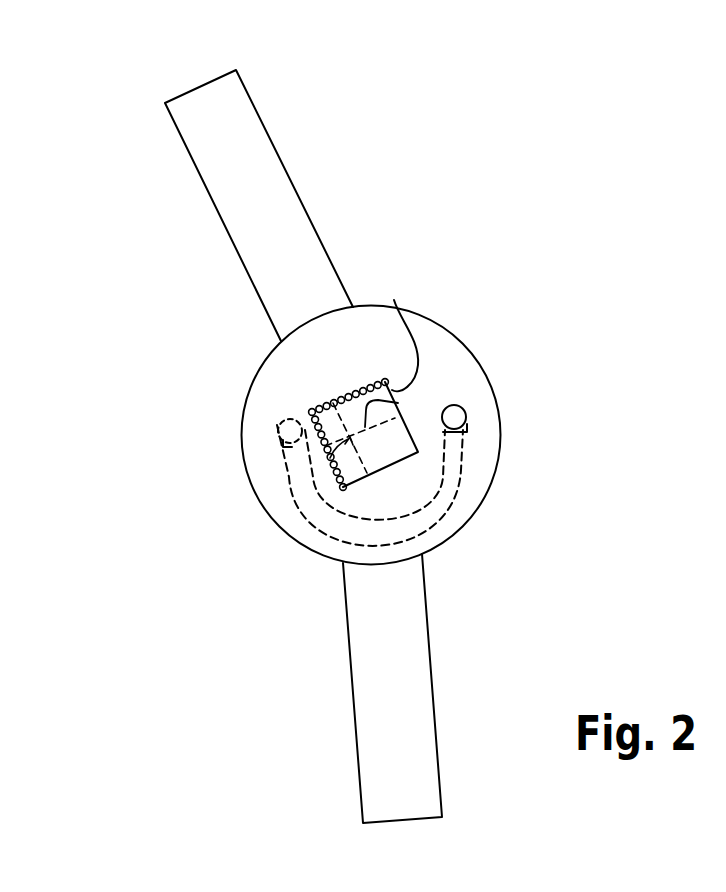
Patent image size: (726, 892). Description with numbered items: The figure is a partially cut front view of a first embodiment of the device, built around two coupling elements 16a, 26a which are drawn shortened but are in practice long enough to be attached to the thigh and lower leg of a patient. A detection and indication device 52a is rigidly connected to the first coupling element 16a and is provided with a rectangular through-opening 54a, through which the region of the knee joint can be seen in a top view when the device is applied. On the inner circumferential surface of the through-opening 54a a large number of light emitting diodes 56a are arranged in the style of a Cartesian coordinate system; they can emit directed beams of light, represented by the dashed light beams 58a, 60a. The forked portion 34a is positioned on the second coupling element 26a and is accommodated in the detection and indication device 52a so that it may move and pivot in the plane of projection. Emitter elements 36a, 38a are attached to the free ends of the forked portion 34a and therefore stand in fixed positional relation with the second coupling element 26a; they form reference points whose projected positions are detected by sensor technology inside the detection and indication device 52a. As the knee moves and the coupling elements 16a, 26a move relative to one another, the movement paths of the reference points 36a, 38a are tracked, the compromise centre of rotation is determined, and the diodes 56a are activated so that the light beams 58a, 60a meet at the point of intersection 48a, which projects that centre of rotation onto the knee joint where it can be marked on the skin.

The first coupling element 16a is at (253, 173).
The second coupling element 26a is at (392, 758).
The forked portion 34a is at (330, 527).
The emitter element 36a is at (280, 420).
The emitter element 38a is at (467, 413).
The point of intersection 48a is at (336, 470).
The detection and indication device 52a is at (430, 333).
The through-opening 54a is at (394, 300).
The light emitting diodes 56a is at (318, 406).
The light beam 58a is at (397, 398).
The light beam 60a is at (383, 453).